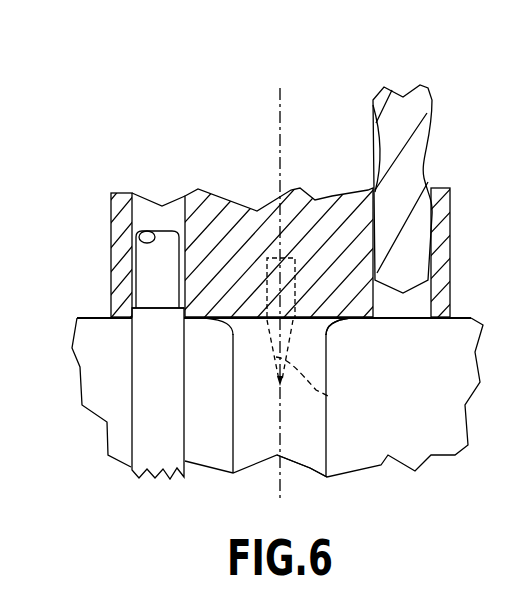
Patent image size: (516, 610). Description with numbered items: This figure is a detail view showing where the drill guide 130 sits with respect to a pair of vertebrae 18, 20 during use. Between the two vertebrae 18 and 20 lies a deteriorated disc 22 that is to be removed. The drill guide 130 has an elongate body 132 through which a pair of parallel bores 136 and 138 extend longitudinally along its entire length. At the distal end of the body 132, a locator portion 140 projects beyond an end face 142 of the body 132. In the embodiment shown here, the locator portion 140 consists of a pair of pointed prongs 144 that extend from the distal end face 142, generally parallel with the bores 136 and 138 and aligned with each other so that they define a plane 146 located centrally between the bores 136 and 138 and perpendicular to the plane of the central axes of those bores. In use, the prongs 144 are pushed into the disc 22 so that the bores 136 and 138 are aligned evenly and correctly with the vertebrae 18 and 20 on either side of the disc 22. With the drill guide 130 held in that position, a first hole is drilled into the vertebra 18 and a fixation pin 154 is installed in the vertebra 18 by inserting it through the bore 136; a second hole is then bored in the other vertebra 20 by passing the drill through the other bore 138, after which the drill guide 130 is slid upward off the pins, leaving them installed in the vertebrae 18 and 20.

The vertebra 18 is at (210, 460).
The vertebra 20 is at (388, 458).
The deteriorated disc 22 is at (306, 460).
The drill guide 130 is at (314, 111).
The elongate body 132 is at (328, 199).
The bore 136 is at (147, 205).
The bore 138 is at (410, 305).
The locator portion 140 is at (250, 332).
The end face 142 is at (338, 322).
The pointed prongs 144 is at (330, 397).
The plane 146 is at (277, 137).
The fixation pin 154 is at (145, 263).